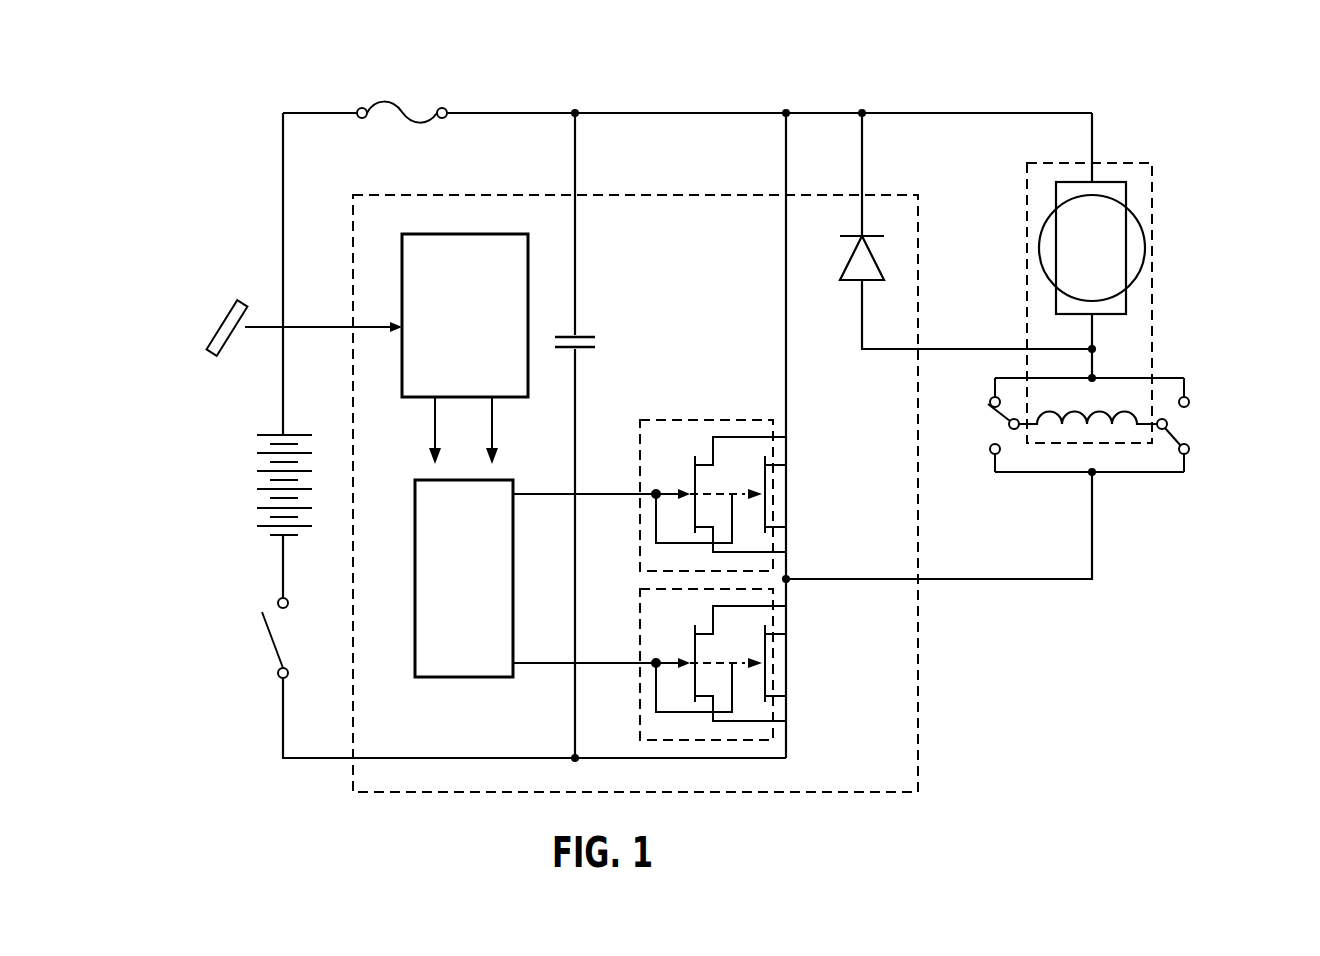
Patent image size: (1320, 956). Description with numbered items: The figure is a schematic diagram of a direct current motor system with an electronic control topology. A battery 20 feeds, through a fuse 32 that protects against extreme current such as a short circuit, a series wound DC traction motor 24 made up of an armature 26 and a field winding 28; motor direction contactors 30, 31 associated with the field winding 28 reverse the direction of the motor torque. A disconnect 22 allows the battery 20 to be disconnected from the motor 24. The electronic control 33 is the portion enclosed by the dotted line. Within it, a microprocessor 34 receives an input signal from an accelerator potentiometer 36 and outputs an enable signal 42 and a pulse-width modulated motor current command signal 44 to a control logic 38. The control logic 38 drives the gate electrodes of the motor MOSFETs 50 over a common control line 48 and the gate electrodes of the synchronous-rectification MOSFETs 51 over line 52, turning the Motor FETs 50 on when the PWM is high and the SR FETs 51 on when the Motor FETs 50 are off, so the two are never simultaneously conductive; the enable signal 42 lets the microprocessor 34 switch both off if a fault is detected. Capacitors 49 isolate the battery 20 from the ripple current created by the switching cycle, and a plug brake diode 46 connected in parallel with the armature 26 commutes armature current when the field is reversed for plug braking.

The battery 20 is at (270, 436).
The disconnect 22 is at (268, 632).
The series wound DC traction motor 24 is at (1152, 208).
The armature 26 is at (1138, 275).
The field winding 28 is at (1130, 406).
The motor direction contactor 30 is at (1185, 434).
The motor direction contactor 31 is at (996, 416).
The fuse 32 is at (392, 108).
The electronic control 33 is at (918, 634).
The microprocessor 34 is at (402, 279).
The accelerator potentiometer 36 is at (234, 308).
The control logic 38 is at (415, 553).
The enable signal 42 is at (433, 428).
The pulse-width modulated motor current command signal 44 is at (494, 428).
The plug brake diode 46 is at (845, 282).
The common control line 48 is at (548, 668).
The capacitors 49 is at (587, 337).
The motor MOSFETs 50 is at (640, 630).
The synchronous-rectification MOSFETs 51 is at (690, 420).
The SR FET gate control line 52 is at (548, 498).